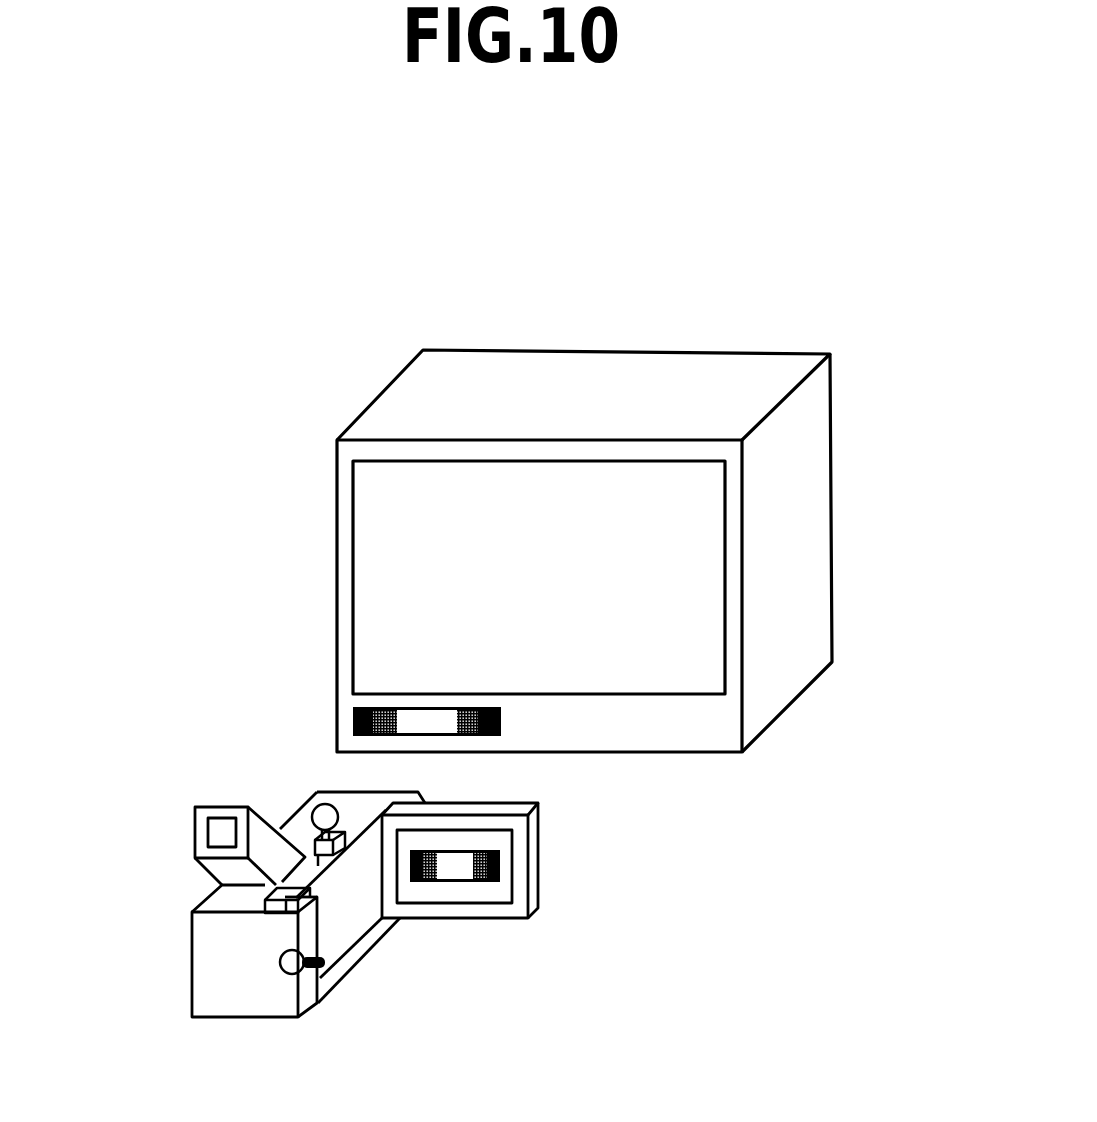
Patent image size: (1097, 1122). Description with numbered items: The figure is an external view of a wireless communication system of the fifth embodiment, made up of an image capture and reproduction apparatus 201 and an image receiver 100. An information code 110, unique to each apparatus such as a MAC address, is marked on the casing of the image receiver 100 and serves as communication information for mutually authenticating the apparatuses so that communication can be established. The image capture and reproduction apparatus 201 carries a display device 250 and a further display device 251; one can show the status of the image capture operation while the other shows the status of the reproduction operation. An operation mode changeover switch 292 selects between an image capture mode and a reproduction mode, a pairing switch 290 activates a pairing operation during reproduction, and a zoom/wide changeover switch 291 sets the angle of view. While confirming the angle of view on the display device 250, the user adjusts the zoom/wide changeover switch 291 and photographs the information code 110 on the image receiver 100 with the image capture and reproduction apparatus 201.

The image receiver 100 is at (817, 482).
The information code 110 is at (353, 720).
The image capture and reproduction apparatus 201 is at (192, 972).
The display device 250 is at (541, 864).
The display device 251 is at (193, 833).
The pairing switch 290 is at (312, 906).
The zoom/wide changeover switch 291 is at (318, 992).
The operation mode changeover switch 292 is at (313, 809).